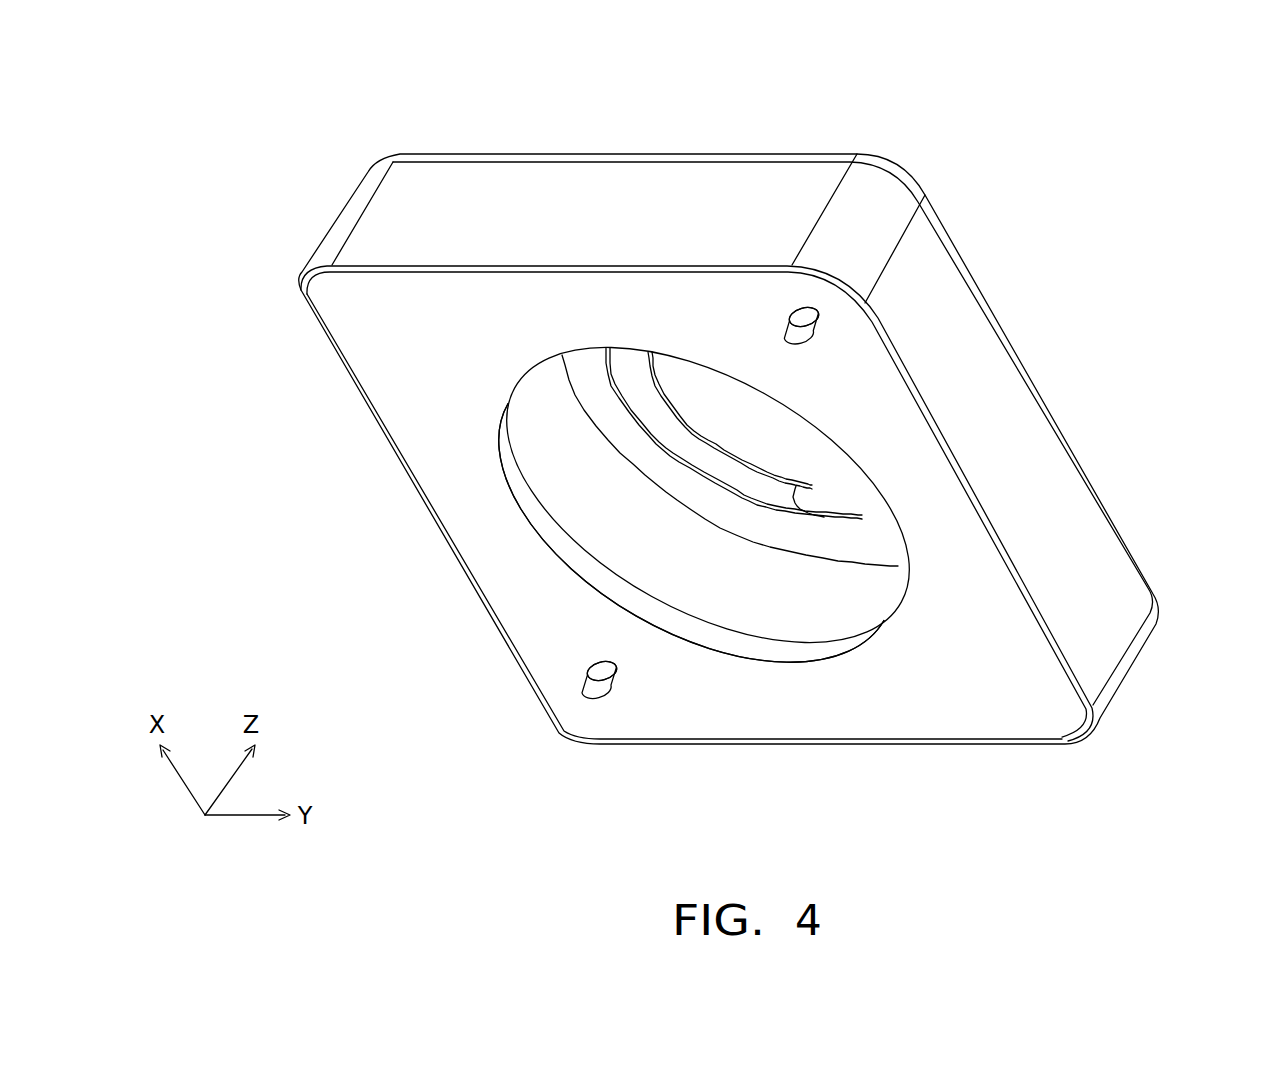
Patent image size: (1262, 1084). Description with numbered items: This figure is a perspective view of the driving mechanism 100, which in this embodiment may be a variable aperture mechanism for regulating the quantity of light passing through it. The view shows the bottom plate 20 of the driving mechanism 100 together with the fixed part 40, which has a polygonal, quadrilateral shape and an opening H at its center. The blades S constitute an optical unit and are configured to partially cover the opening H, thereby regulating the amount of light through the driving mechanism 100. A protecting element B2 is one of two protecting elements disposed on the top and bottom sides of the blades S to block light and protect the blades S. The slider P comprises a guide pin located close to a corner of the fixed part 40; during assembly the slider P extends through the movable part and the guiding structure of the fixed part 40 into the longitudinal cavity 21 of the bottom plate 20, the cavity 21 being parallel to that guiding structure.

The driving mechanism 100 is at (1256, 86).
The bottom plate 20 is at (503, 578).
The longitudinal cavity 21 is at (790, 328).
The fixed part 40 is at (585, 500).
The opening H is at (550, 435).
The slider P is at (808, 331).
The blades S is at (675, 432).
The protecting element B2 is at (823, 537).